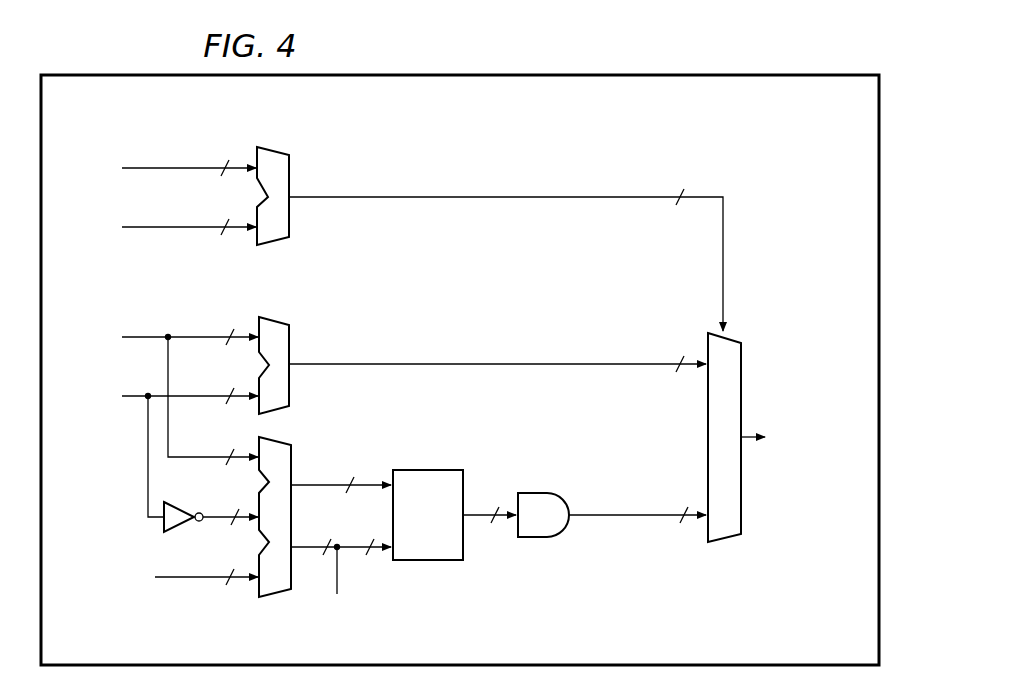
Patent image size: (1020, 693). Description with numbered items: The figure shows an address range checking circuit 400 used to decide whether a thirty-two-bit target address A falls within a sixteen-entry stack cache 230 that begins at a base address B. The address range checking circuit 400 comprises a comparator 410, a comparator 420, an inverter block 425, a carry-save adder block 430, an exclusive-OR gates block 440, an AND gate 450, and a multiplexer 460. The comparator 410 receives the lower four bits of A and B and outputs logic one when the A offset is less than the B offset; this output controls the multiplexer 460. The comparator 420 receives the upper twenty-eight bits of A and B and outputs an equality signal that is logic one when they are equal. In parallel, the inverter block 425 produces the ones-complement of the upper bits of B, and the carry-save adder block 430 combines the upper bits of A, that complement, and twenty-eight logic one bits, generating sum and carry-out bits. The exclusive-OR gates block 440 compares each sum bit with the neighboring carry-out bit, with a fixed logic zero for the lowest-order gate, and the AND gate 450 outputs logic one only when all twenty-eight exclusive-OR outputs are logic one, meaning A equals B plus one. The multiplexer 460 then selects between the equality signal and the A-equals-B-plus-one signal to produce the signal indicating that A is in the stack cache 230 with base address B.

The stack cache 230 is at (619, 71).
The address range checking circuit 400 is at (778, 151).
The comparator 410 is at (269, 148).
The comparator 420 is at (269, 318).
The inverter block 425 is at (161, 524).
The carry-save adder block 430 is at (276, 595).
The exclusive-OR gates block 440 is at (430, 561).
The AND gate 450 is at (541, 538).
The multiplexer 460 is at (727, 542).